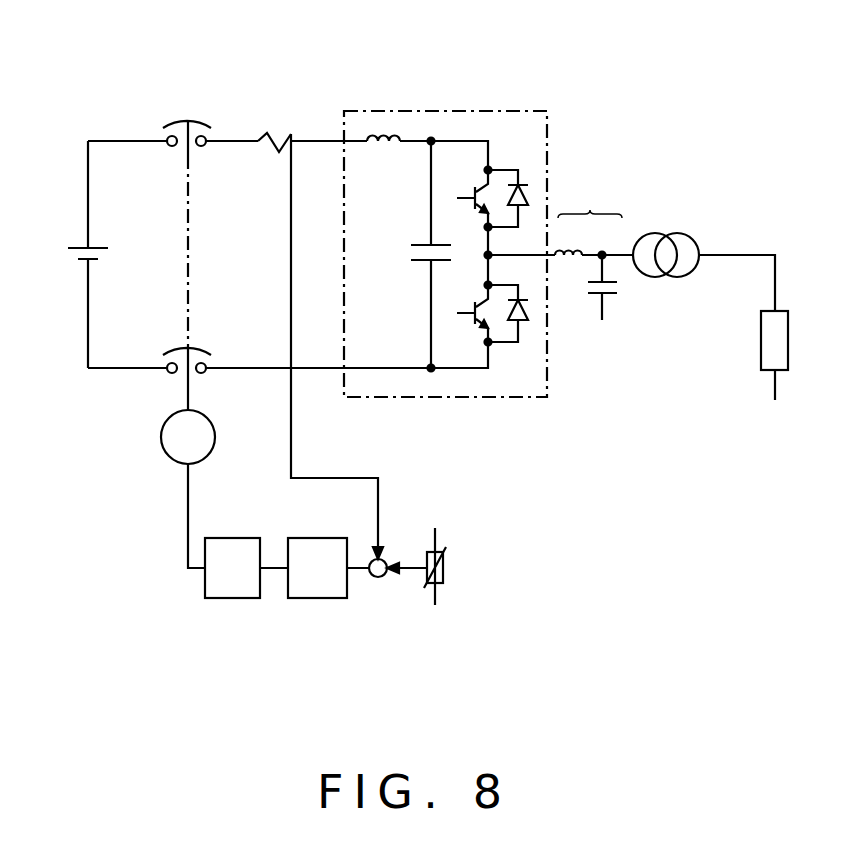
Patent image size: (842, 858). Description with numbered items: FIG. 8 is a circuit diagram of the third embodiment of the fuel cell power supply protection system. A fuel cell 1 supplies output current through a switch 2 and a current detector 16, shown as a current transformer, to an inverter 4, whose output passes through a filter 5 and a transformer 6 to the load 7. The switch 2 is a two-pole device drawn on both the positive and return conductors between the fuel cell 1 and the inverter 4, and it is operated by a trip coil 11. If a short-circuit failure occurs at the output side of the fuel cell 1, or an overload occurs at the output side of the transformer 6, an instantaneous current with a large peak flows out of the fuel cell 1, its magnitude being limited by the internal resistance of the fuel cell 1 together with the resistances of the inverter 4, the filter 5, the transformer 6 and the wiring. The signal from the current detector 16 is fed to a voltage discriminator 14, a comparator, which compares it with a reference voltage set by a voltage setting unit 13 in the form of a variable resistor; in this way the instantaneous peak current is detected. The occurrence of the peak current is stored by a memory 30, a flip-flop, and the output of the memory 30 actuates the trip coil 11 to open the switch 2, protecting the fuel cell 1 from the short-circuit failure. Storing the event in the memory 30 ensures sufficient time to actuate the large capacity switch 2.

The fuel cell 1 is at (68, 250).
The switch 2 is at (208, 131).
The current detector 16 is at (294, 130).
The inverter 4 is at (420, 110).
The filter 5 is at (594, 185).
The transformer 6 is at (697, 235).
The load 7 is at (781, 316).
The trip coil 11 is at (163, 450).
The memory 30 is at (215, 598).
The voltage discriminator 14 is at (337, 598).
The voltage setting unit 13 is at (444, 549).